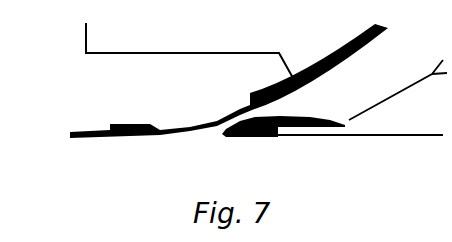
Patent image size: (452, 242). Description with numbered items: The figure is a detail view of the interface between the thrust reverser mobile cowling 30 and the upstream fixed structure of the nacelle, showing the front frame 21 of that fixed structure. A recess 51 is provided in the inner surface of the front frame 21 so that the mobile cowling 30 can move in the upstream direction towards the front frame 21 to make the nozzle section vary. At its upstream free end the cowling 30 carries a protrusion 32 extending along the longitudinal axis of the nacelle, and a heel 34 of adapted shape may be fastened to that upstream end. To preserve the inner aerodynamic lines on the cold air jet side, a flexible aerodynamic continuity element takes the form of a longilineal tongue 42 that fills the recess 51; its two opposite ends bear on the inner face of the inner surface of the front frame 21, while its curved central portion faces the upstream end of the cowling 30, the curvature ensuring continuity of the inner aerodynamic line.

The front frame 21 is at (107, 80).
The thrust reverser mobile cowling 30 is at (384, 118).
The protrusion 32 is at (311, 134).
The heel 34 is at (266, 138).
The tongue 42 is at (160, 135).
The recess 51 is at (147, 138).